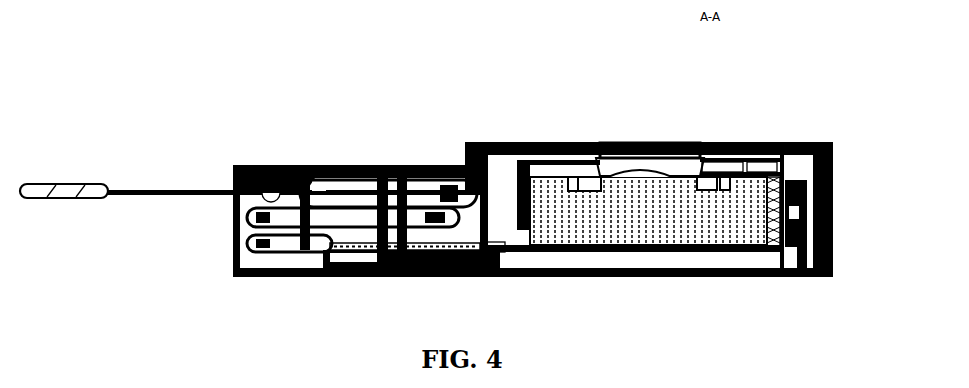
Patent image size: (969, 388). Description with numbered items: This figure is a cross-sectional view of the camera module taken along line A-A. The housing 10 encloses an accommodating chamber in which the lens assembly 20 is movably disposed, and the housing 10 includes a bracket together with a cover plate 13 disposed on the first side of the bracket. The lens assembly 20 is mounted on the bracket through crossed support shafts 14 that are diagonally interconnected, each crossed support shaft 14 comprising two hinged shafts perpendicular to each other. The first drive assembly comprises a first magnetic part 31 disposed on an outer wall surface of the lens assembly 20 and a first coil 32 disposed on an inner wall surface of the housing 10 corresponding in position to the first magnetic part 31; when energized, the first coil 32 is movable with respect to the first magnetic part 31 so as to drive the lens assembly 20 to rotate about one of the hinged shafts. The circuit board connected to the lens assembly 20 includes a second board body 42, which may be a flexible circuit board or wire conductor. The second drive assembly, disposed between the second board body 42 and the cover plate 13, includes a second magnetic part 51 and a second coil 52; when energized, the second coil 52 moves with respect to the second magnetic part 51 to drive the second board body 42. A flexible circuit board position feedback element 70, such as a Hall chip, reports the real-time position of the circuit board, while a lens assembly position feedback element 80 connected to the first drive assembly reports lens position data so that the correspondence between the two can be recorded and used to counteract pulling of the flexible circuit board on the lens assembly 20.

The housing 10 is at (477, 155).
The cover plate 13 is at (515, 278).
The crossed support shaft 14 is at (538, 158).
The lens assembly 20 is at (623, 157).
The first magnetic part 31 is at (835, 238).
The first coil 32 is at (835, 205).
The second board body 42 is at (243, 208).
The second magnetic part 51 is at (388, 275).
The second coil 52 is at (312, 275).
The flexible circuit board position feedback element 70 is at (547, 262).
The lens assembly position feedback element 80 is at (835, 172).